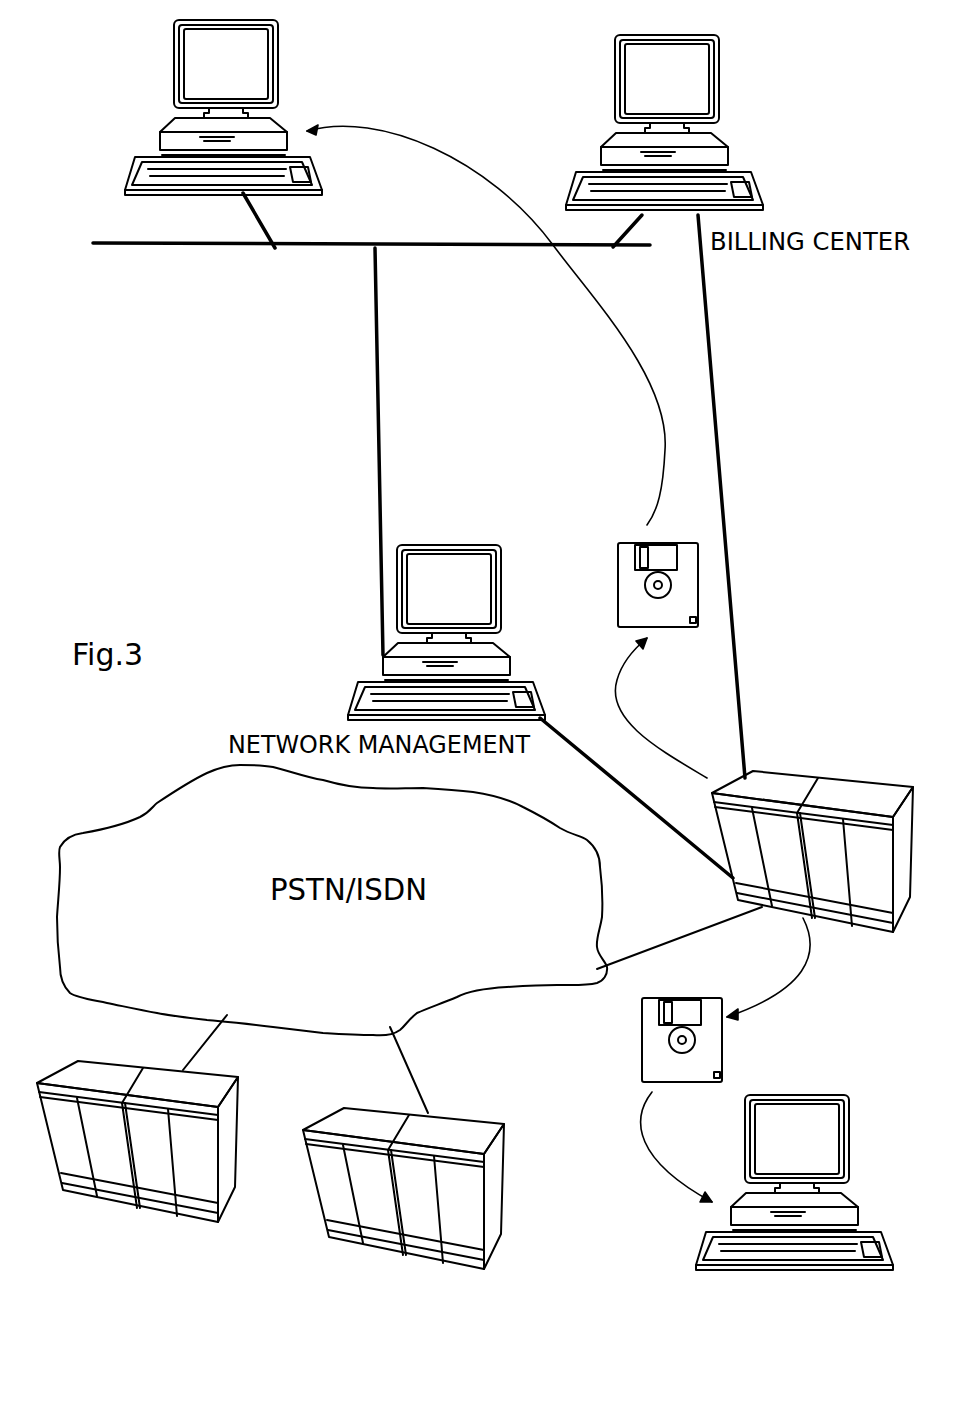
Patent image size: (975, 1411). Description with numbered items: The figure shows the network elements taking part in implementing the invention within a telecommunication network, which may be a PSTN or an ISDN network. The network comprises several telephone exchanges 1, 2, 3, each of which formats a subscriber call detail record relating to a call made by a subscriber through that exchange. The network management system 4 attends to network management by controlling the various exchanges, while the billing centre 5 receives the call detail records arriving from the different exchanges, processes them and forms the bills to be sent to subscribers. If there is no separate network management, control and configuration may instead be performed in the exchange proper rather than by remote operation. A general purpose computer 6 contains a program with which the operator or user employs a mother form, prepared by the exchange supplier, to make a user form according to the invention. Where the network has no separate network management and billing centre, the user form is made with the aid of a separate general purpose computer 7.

The telephone exchange 1 is at (903, 887).
The telephone exchange 2 is at (313, 1215).
The telecommunications exchange 3 is at (137, 1212).
The network management system 4 is at (518, 655).
The billing centre 5 is at (733, 135).
The general purpose computer 6 is at (295, 110).
The general purpose computer 7 is at (857, 1187).